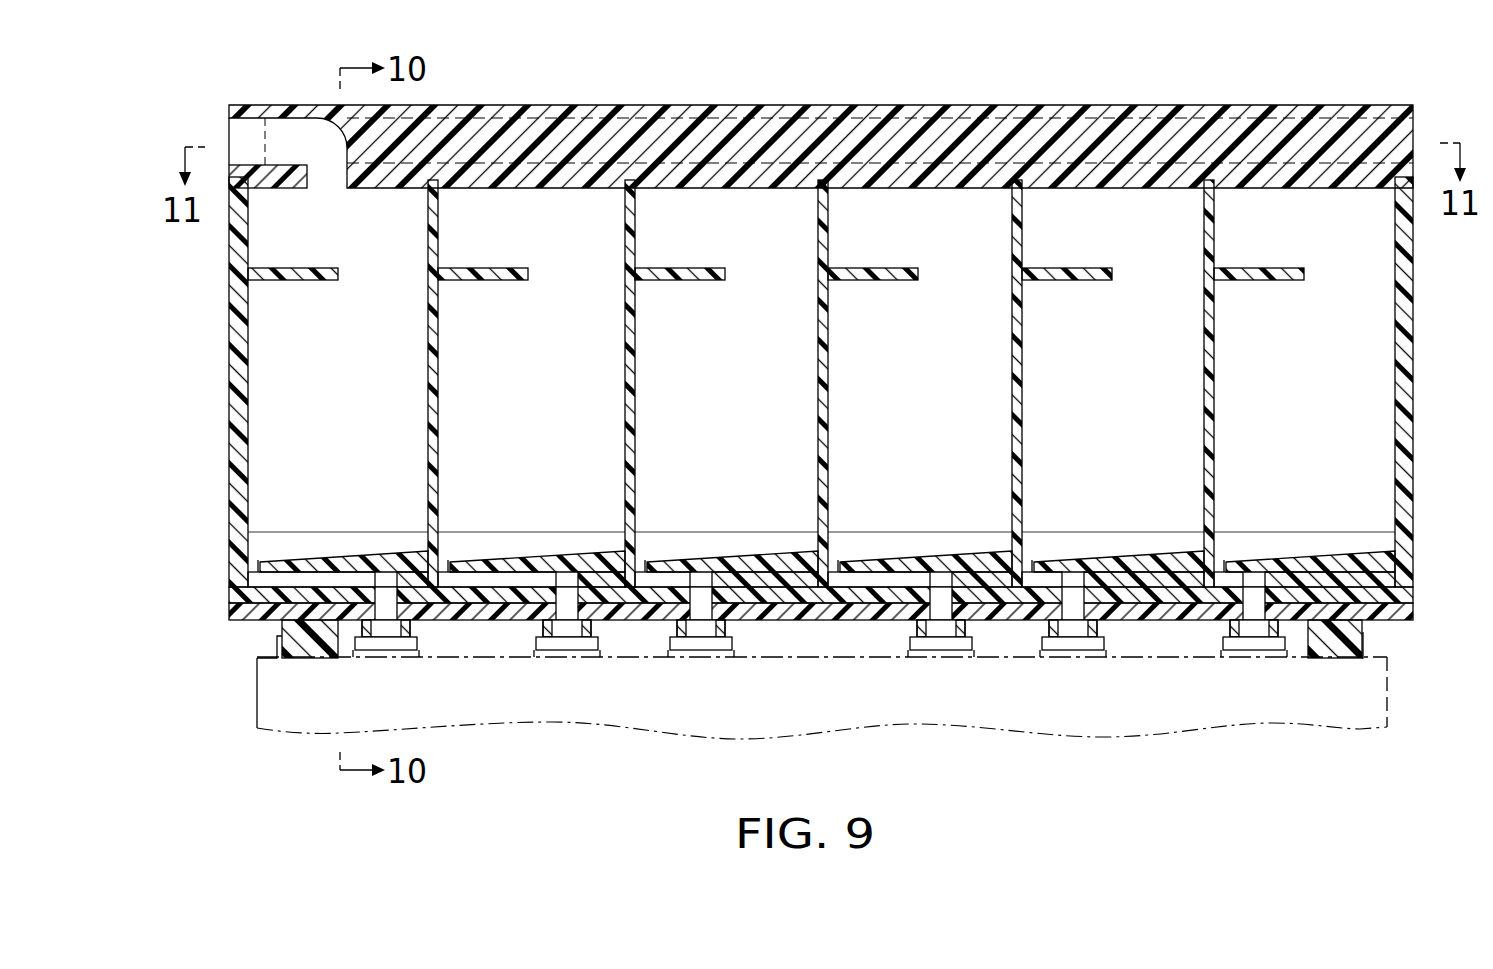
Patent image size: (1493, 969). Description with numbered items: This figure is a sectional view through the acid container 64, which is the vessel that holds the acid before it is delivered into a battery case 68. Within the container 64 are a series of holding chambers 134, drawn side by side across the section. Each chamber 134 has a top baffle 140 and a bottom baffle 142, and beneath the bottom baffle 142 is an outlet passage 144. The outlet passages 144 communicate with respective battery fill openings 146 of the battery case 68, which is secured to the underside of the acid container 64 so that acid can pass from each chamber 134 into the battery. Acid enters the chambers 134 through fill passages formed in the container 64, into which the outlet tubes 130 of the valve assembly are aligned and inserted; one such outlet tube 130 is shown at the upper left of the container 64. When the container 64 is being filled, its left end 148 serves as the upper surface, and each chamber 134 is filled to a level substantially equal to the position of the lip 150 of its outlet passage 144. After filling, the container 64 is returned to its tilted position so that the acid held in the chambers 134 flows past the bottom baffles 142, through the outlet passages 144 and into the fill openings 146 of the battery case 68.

The acid container 64 is at (700, 105).
The battery case 68 is at (1377, 667).
The outlet tubes 130 is at (240, 127).
The holding chambers 134 is at (360, 384).
The top baffle 140 is at (293, 268).
The bottom baffle 142 is at (323, 563).
The outlet passage 144 is at (317, 582).
The battery fill openings 146 is at (386, 632).
The left end 148 is at (229, 437).
The lip 150 is at (253, 563).